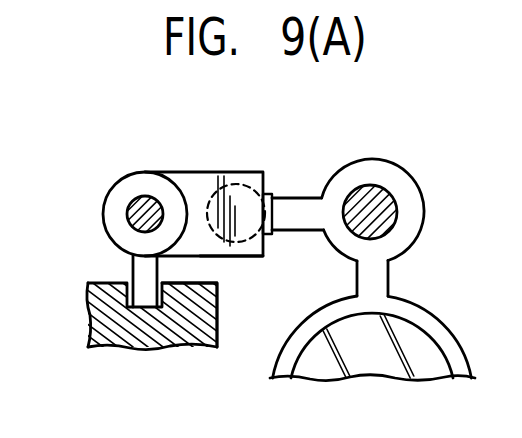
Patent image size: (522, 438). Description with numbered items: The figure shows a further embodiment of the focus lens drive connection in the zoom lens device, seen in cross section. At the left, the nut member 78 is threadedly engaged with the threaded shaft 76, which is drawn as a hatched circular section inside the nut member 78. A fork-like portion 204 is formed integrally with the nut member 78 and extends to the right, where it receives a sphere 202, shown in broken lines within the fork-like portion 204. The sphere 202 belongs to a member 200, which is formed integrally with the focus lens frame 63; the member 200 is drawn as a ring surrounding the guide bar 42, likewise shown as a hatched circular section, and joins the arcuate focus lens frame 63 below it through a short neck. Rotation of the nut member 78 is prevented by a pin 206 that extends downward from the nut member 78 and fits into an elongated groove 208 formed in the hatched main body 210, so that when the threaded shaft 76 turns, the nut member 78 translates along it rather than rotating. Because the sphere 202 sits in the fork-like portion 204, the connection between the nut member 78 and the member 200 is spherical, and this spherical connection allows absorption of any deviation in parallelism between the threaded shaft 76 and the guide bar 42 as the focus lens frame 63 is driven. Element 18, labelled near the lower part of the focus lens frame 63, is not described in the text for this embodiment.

The cover plate 18 is at (377, 365).
The guide bar 42 is at (383, 194).
The focus lens frame 63 is at (437, 320).
The threaded shaft 76 is at (126, 208).
The nut member 78 is at (142, 182).
The member 200 is at (353, 158).
The sphere 202 is at (239, 172).
The fork-like portion 204 is at (243, 258).
The pin 206 is at (132, 272).
The elongated groove 208 is at (117, 310).
The main body 210 is at (196, 325).